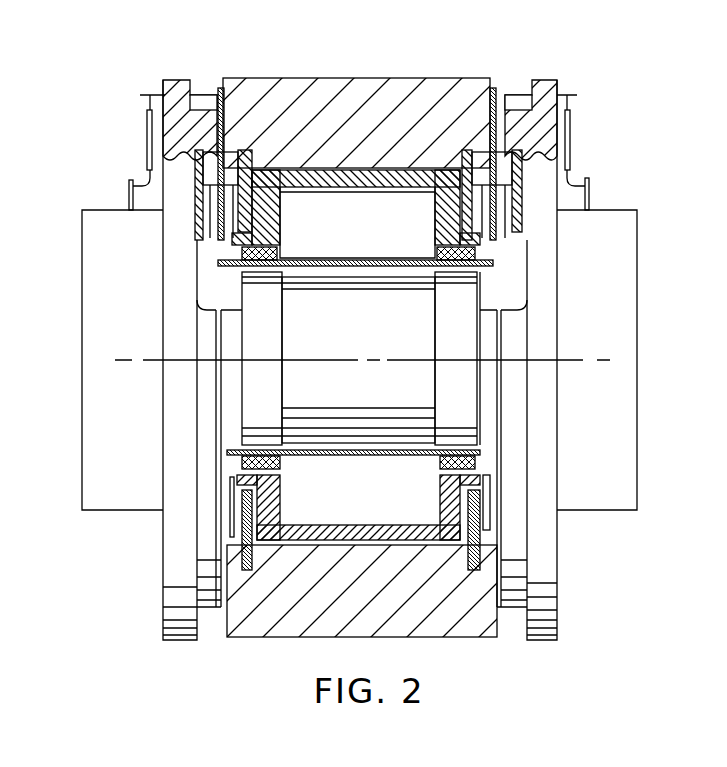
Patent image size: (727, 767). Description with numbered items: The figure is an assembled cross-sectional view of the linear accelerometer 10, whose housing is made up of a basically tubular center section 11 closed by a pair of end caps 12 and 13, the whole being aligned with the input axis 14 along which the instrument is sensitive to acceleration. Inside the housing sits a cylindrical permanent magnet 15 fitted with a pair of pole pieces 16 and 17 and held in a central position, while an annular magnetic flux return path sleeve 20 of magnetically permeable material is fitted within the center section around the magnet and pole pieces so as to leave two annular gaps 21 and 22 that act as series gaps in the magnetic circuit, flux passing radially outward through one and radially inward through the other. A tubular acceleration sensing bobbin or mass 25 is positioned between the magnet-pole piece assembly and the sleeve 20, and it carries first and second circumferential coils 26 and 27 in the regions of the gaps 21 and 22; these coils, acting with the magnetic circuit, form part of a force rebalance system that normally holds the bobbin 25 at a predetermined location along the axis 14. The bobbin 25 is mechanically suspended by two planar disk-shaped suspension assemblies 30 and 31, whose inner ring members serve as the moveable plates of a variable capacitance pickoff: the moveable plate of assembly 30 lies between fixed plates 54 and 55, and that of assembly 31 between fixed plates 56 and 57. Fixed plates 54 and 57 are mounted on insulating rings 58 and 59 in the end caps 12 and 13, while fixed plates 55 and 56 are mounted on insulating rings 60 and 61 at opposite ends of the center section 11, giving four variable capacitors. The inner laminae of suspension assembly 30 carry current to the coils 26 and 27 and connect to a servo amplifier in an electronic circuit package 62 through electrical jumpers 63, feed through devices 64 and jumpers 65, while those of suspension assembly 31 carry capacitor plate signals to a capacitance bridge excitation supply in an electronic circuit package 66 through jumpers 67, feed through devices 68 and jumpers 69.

The linear accelerometer 10 is at (280, 64).
The tubular center section 11 is at (352, 78).
The end cap 12 is at (163, 226).
The end cap 13 is at (561, 226).
The input axis 14 is at (572, 362).
The cylindrical permanent magnet 15 is at (357, 440).
The pole piece 16 is at (255, 418).
The pole piece 17 is at (470, 423).
The annular magnetic flux return path sleeve 20 is at (362, 545).
The annular gap 21 is at (230, 276).
The annular gap 22 is at (492, 278).
The acceleration sensing bobbin 25 is at (352, 259).
The first circumferential coil 26 is at (280, 494).
The second circumferential coil 27 is at (443, 500).
The suspension assembly 30 is at (221, 86).
The suspension assembly 31 is at (498, 86).
The fixed capacitor plate 54 is at (195, 248).
The fixed capacitor plate 55 is at (283, 212).
The fixed capacitor plate 56 is at (433, 232).
The fixed capacitor plate 57 is at (522, 247).
The insulating ring 58 is at (193, 198).
The insulating ring 59 is at (525, 196).
The insulating ring 60 is at (287, 122).
The insulating ring 61 is at (455, 166).
The electronic circuit package 62 is at (83, 392).
The electrical jumper 63 is at (227, 97).
The feed through device 64 is at (149, 93).
The jumper 65 is at (143, 128).
The electronic circuit package 66 is at (637, 300).
The jumper 67 is at (500, 110).
The feed through device 68 is at (565, 93).
The jumper 69 is at (572, 124).